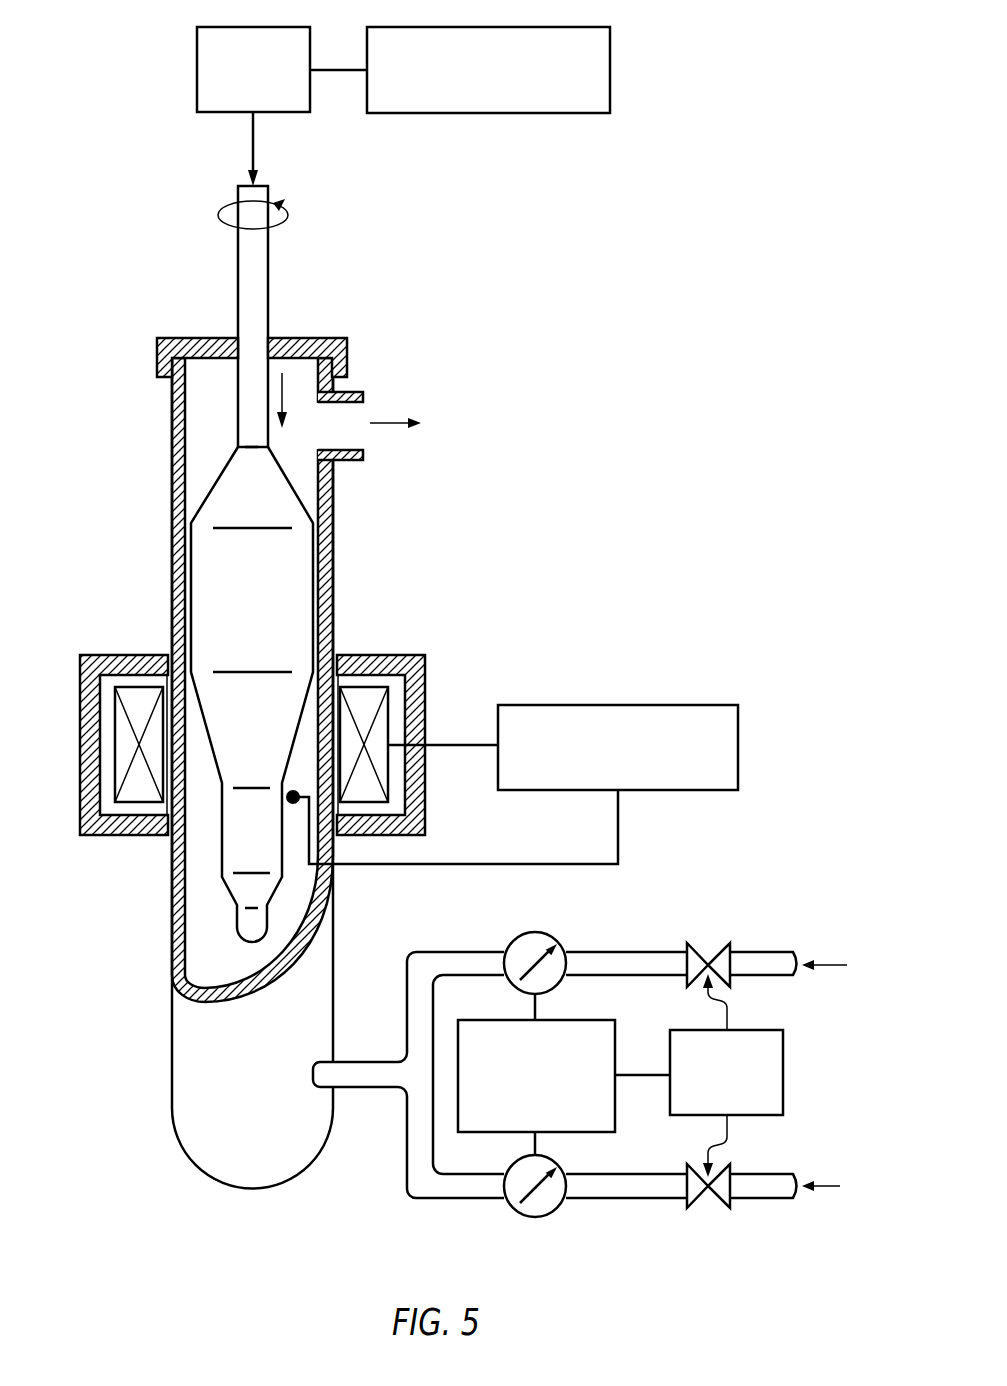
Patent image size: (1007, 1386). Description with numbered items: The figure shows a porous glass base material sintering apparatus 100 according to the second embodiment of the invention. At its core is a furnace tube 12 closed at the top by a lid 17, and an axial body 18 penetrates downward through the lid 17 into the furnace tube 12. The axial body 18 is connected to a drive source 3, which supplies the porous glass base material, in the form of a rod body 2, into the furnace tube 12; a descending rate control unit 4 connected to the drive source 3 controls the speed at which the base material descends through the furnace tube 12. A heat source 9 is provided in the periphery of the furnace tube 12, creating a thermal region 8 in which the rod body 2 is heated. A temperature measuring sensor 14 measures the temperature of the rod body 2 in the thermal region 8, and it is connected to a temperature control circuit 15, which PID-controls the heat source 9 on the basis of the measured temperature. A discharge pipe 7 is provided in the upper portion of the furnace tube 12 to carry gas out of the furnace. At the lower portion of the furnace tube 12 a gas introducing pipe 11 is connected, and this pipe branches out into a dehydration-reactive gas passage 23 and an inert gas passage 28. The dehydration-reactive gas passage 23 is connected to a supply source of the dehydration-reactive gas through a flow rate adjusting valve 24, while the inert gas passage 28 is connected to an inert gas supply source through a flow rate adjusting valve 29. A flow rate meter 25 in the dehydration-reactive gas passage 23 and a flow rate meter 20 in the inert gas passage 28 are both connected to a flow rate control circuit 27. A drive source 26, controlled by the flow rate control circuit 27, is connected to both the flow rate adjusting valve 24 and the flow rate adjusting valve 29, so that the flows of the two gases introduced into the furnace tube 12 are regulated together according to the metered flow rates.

The crystal growing apparatus 100 is at (66, 13).
The rod body 2 is at (225, 488).
The drive source 3 is at (197, 69).
The descending rate control unit 4 is at (610, 70).
The discharge pipe 7 is at (350, 462).
The thermal region 8 is at (197, 770).
The heat source 9 is at (366, 697).
The gas introducing pipe 11 is at (373, 1078).
The furnace tube 12 is at (318, 968).
The temperature measuring sensor 14 is at (292, 792).
The temperature control circuit 15 is at (618, 705).
The lid 17 is at (318, 340).
The axial body 18 is at (253, 288).
The flow rate meter 20 is at (542, 932).
The dehydration-reactive gas passage 23 is at (765, 1194).
The flow rate adjusting valve 24 is at (722, 1194).
The flow rate meter 25 is at (540, 1217).
The drive source 26 is at (783, 1076).
The flow rate control circuit 27 is at (577, 1018).
The inert gas passage 28 is at (767, 952).
The flow rate adjusting valve 29 is at (718, 947).